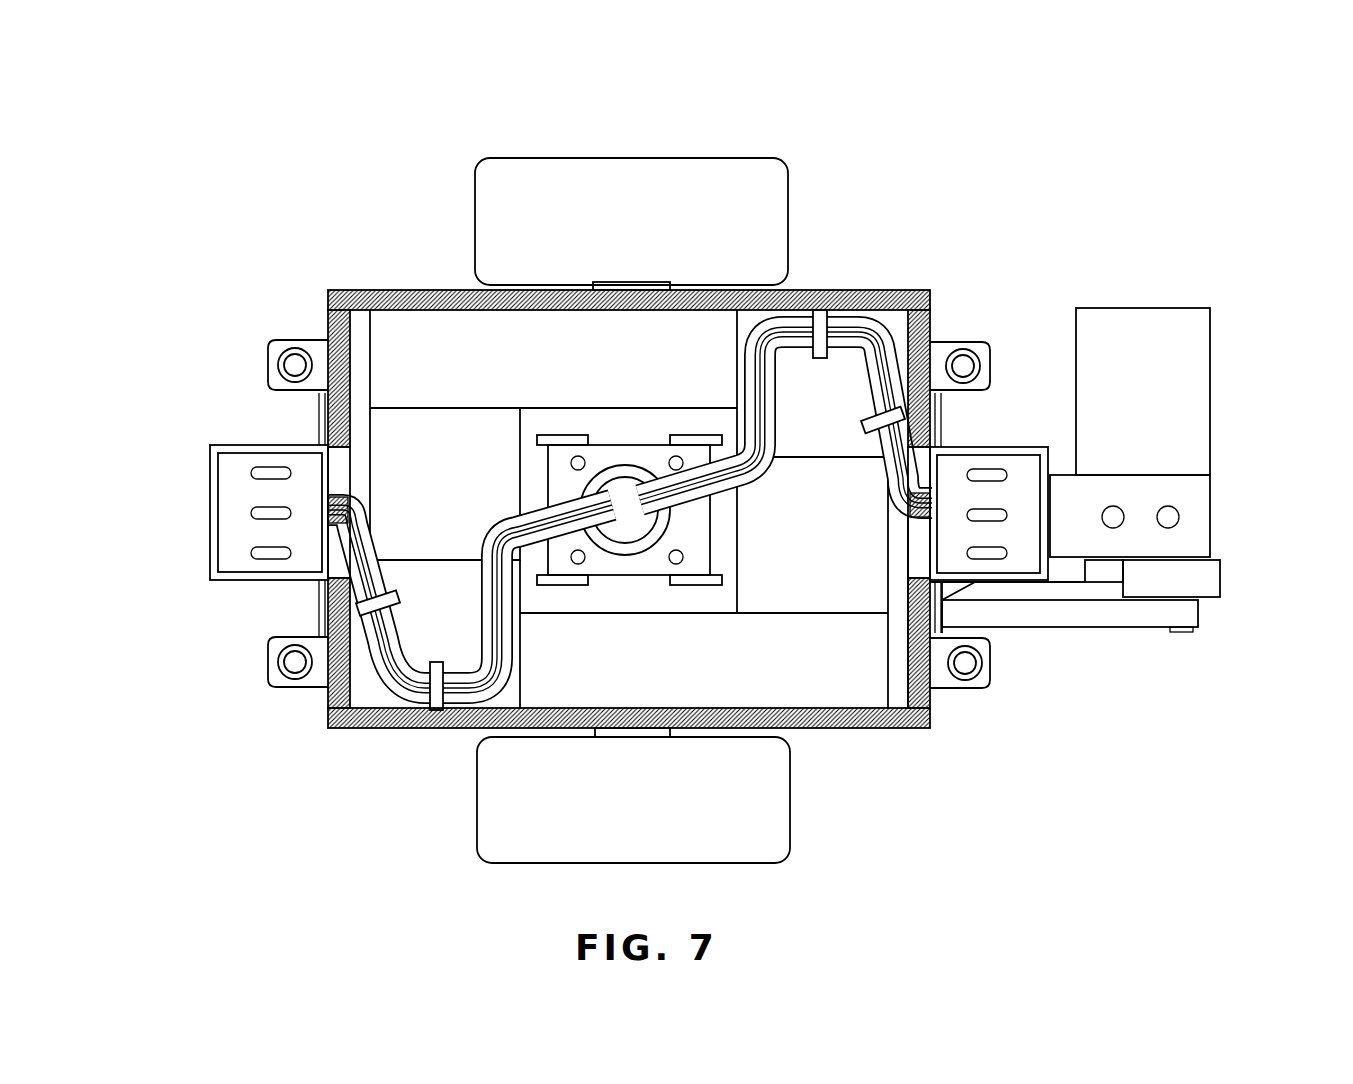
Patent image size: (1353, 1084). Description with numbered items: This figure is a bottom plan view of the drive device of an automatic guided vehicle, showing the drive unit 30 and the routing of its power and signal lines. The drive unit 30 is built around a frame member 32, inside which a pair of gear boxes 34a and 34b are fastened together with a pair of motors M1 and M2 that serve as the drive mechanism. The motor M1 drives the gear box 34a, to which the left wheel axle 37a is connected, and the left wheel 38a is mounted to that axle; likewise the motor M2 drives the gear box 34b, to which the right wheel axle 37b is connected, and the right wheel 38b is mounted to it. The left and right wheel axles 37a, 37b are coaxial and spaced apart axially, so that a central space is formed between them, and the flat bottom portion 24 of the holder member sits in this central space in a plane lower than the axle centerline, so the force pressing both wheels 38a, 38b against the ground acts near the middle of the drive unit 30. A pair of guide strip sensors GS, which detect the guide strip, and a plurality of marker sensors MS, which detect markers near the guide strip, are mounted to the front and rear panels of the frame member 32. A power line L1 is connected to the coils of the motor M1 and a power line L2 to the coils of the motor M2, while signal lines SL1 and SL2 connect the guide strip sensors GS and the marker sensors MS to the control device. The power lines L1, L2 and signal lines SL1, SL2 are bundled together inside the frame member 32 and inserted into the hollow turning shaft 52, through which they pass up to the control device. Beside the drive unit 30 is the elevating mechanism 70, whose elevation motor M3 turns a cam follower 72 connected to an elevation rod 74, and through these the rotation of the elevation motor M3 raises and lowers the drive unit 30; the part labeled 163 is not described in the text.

The drive unit 30 is at (939, 110).
The frame member 32 is at (360, 730).
The flat bottom portion 24 is at (640, 453).
The turning shaft 52 is at (607, 475).
The gear box 34a is at (498, 347).
The gear box 34b is at (723, 685).
The motor M1 is at (465, 433).
The motor M2 is at (793, 587).
The elevation motor M3 is at (1148, 308).
The marker sensors MS is at (288, 342).
The guide strip sensors GS is at (222, 508).
The signal line SL1 is at (630, 510).
The signal line SL2 is at (465, 586).
The power line L1 is at (313, 587).
The power line L2 is at (913, 515).
The left wheel axle 37a is at (645, 285).
The right wheel axle 37b is at (630, 735).
The left wheel 38a is at (667, 158).
The right wheel 38b is at (477, 835).
The elevating mechanism 70 is at (1245, 423).
The actuator base 163 is at (1215, 510).
The cam follower 72 is at (1215, 575).
The elevation rod 74 is at (1125, 627).